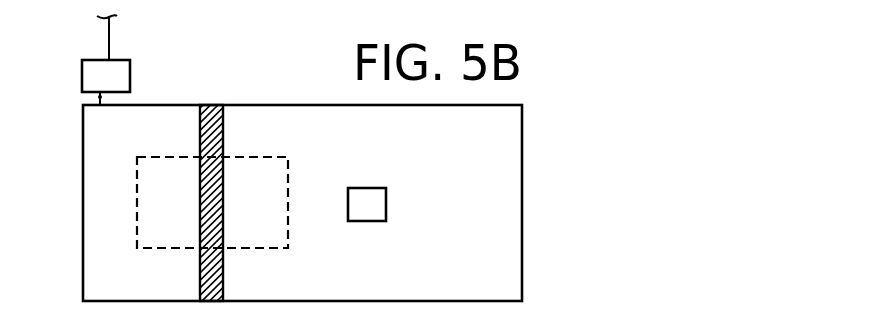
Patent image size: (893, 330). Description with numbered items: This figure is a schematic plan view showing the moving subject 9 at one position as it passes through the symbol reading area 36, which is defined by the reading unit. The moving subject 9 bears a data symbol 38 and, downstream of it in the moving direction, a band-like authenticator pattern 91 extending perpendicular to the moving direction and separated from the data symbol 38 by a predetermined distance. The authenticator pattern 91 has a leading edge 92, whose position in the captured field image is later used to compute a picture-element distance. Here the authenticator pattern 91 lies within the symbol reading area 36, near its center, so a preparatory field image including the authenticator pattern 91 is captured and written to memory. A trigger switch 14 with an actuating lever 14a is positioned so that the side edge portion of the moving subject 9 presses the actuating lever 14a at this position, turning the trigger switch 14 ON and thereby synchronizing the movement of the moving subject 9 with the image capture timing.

The moving subject 9 is at (523, 212).
The authenticator pattern 91 is at (228, 128).
The leading edge 92 is at (200, 137).
The symbol reading area 36 is at (287, 157).
The data symbol 38 is at (368, 196).
The trigger switch 14 is at (88, 72).
The actuating lever 14a is at (100, 96).